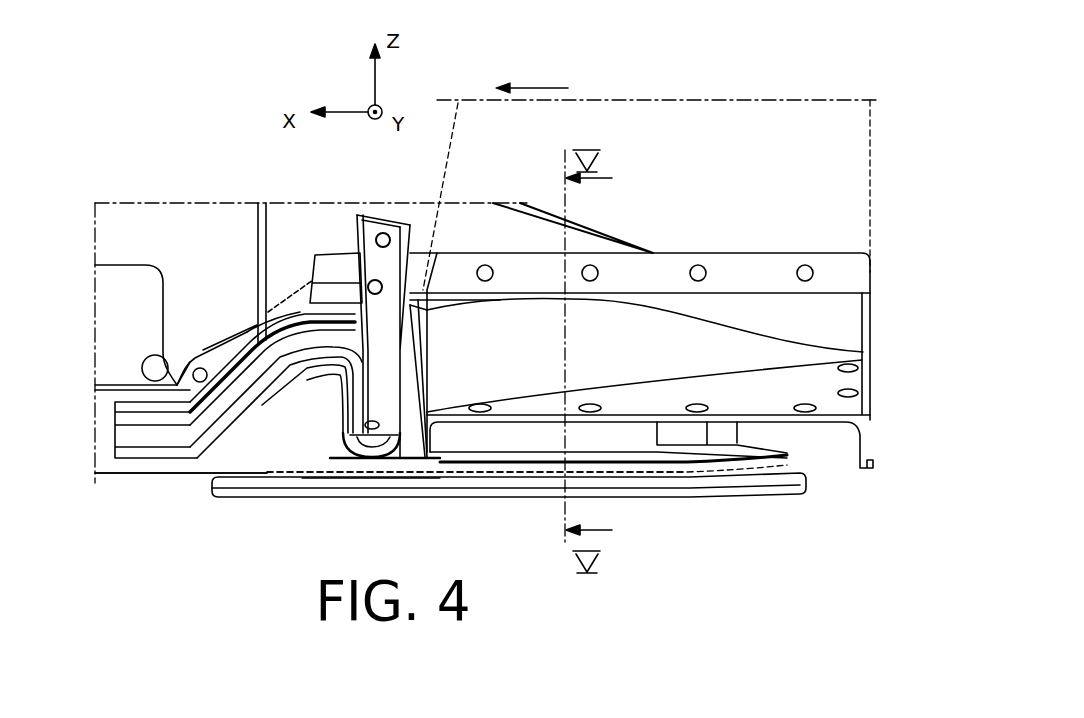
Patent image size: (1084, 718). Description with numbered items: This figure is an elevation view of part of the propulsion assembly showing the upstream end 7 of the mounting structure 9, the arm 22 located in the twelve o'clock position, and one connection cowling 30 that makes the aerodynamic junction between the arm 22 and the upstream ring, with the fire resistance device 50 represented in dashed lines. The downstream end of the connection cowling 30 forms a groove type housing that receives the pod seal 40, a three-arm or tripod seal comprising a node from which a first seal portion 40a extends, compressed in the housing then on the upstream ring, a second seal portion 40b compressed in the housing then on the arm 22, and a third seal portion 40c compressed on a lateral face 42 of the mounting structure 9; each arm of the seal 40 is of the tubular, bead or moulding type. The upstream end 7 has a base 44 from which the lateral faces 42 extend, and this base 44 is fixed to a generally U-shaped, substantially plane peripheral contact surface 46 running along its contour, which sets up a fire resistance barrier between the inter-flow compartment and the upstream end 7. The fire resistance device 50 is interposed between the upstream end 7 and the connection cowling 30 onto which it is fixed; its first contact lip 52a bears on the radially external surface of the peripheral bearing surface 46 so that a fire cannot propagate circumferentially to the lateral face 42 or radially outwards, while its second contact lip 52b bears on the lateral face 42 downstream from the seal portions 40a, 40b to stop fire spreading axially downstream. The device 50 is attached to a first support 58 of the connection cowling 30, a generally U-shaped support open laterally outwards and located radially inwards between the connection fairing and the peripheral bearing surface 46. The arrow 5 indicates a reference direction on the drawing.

The vehicle front direction arrow 5 is at (533, 88).
The upstream end 7 is at (157, 204).
The mounting structure 9 is at (184, 199).
The arm 22 is at (740, 108).
The connection cowling 30 is at (640, 330).
The pod seal 40 is at (277, 363).
The first seal portion 40a is at (355, 398).
The second seal portion 40b is at (373, 262).
The third seal portion 40c is at (170, 440).
The lateral face 42 is at (123, 232).
The base 44 is at (104, 475).
The peripheral contact surface 46 is at (708, 488).
The fire resistance device 50 is at (302, 477).
The first contact lip 52a is at (513, 473).
The second contact lip 52b is at (283, 292).
The first support 58 is at (790, 458).